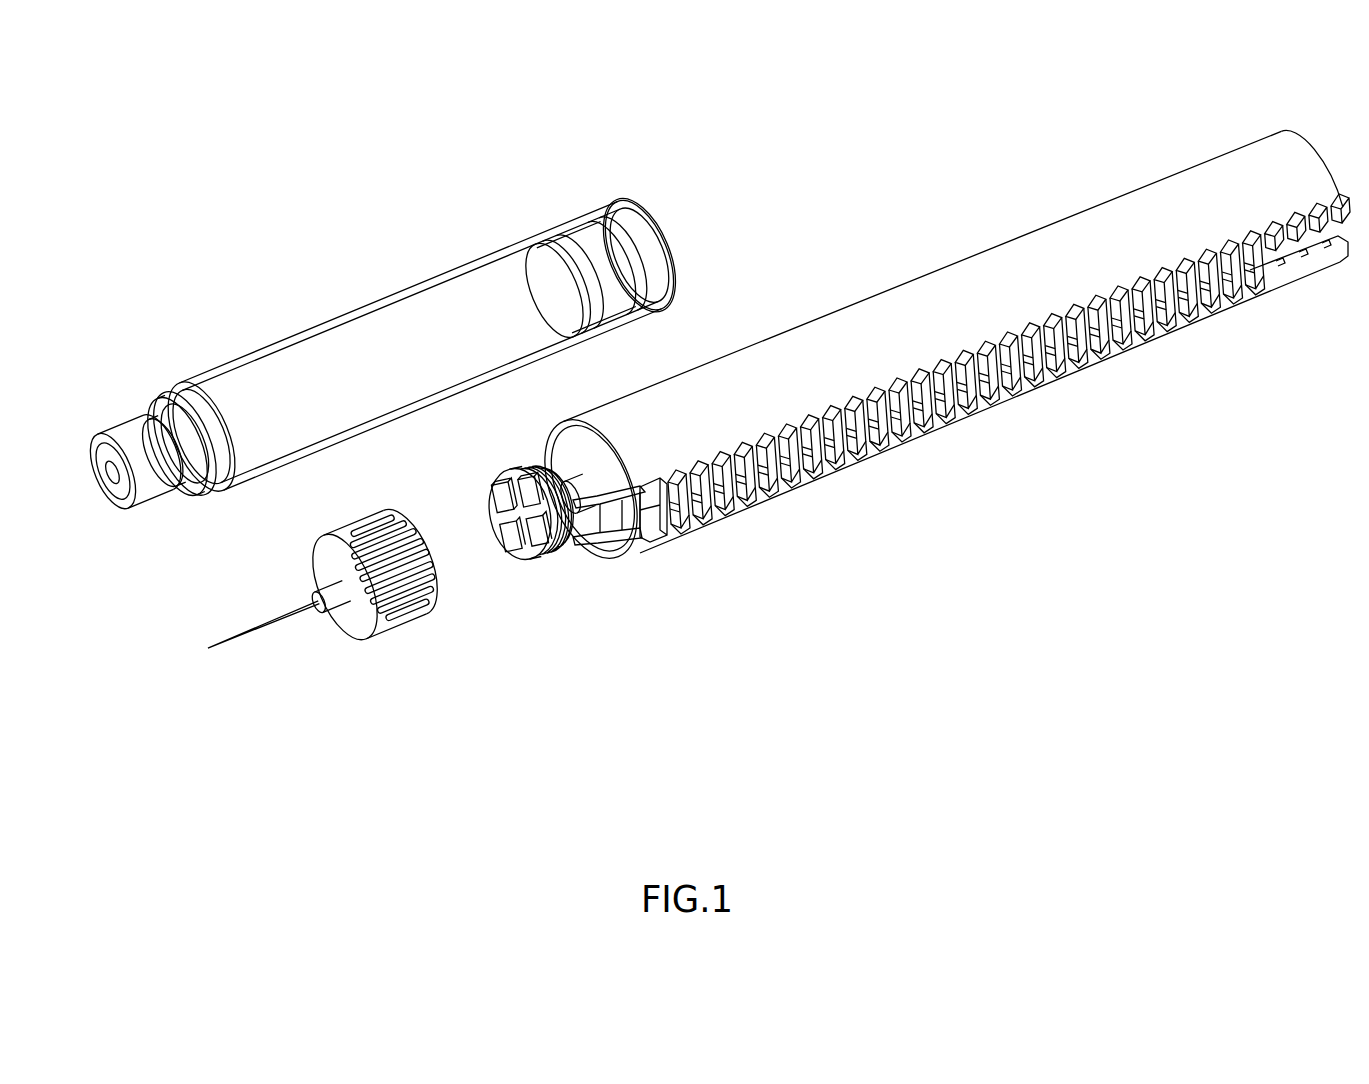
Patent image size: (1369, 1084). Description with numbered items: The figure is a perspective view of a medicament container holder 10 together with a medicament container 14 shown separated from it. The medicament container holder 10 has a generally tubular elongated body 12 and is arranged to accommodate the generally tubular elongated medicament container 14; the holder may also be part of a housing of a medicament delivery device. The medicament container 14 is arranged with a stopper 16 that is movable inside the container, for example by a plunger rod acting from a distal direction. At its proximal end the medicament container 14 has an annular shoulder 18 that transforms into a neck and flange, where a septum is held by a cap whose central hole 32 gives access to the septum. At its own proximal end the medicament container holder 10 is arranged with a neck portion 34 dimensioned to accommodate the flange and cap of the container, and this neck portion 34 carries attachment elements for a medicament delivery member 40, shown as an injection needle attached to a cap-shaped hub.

The medicament container holder 10 is at (1076, 147).
The generally tubular elongated body 12 is at (945, 346).
The medicament container 14 is at (388, 337).
The stopper 16 is at (586, 277).
The annular shoulder 18 is at (178, 446).
The central hole 32 is at (135, 461).
The neck portion 34 is at (531, 511).
The medicament delivery member 40 is at (405, 652).